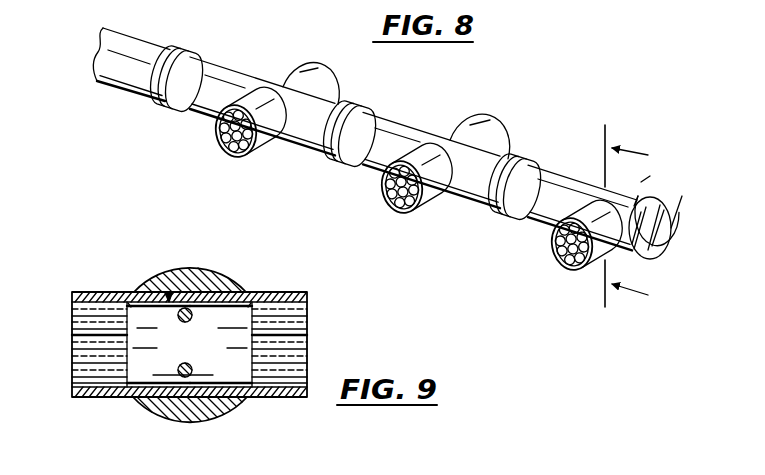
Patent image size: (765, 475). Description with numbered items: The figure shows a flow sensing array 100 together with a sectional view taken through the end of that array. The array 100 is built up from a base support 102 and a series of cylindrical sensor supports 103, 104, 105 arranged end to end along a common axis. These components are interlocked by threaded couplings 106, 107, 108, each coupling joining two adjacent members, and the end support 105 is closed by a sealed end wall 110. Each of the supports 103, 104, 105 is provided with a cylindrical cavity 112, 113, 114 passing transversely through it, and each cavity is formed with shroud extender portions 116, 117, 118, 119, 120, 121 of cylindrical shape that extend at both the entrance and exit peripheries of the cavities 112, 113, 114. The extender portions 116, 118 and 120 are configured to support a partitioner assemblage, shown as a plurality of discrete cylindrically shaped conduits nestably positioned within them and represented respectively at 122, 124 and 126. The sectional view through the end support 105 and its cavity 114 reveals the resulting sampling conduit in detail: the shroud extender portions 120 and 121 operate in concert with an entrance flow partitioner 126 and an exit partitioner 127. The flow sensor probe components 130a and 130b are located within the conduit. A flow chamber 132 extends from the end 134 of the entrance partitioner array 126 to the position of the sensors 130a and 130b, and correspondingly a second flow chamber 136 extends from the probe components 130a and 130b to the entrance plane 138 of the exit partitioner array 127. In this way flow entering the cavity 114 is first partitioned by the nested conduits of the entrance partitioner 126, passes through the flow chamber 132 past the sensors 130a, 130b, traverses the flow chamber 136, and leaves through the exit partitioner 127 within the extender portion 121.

In FIG. 8, the flow sensing array 100 is at (613, 65).
In FIG. 8, the base support 102 is at (138, 45).
In FIG. 8, the cylindrical sensor support 103 is at (235, 73).
In FIG. 8, the cylindrical sensor support 104 is at (398, 124).
In FIG. 8, the end support 105 is at (632, 200).
In FIG. 9, the end support 105 is at (187, 270).
In FIG. 8, the threaded coupling 106 is at (187, 62).
In FIG. 8, the threaded coupling 107 is at (355, 112).
In FIG. 8, the threaded coupling 108 is at (528, 162).
In FIG. 8, the sealed end wall 110 is at (653, 236).
In FIG. 8, the cylindrical cavity 112 is at (223, 144).
In FIG. 8, the cylindrical cavity 113 is at (388, 200).
In FIG. 8, the cylindrical cavity 114 is at (562, 252).
In FIG. 9, the cylindrical cavity 114 is at (168, 296).
In FIG. 8, the shroud extender portion 116 is at (230, 152).
In FIG. 8, the shroud extender portion 117 is at (321, 73).
In FIG. 8, the shroud extender portion 118 is at (395, 208).
In FIG. 8, the shroud extender portion 119 is at (488, 123).
In FIG. 8, the shroud extender portion 120 is at (556, 260).
In FIG. 9, the shroud extender portion 120 is at (83, 291).
In FIG. 8, the shroud extender portion 121 is at (657, 177).
In FIG. 9, the shroud extender portion 121 is at (287, 292).
In FIG. 8, the partitioner assemblage 122 is at (209, 131).
In FIG. 8, the partitioner assemblage 124 is at (373, 187).
In FIG. 8, the entrance flow partitioner 126 is at (547, 244).
In FIG. 9, the entrance flow partitioner 126 is at (72, 345).
In FIG. 9, the exit partitioner 127 is at (307, 337).
In FIG. 9, the flow sensor probe component 130a is at (175, 354).
In FIG. 9, the flow sensor probe component 130b is at (180, 320).
In FIG. 9, the flow chamber 132 is at (152, 362).
In FIG. 9, the end of partitioner array 134 is at (132, 300).
In FIG. 9, the flow chamber 136 is at (240, 363).
In FIG. 9, the entrance plane 138 is at (247, 296).